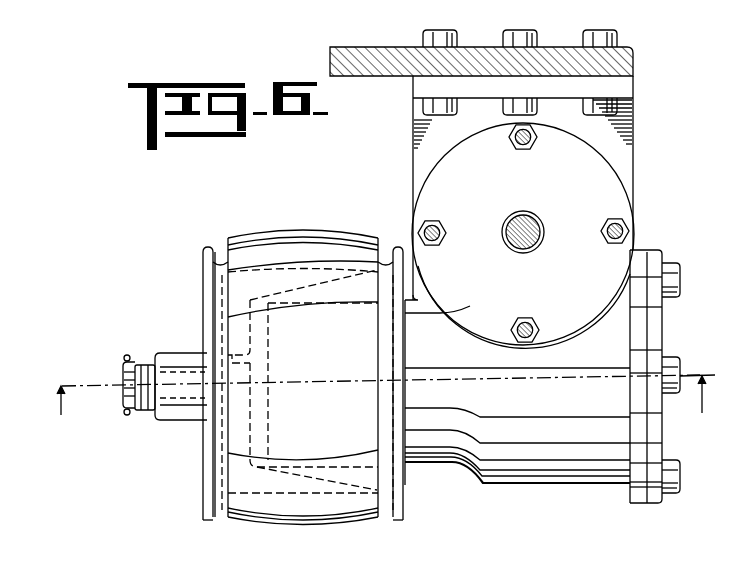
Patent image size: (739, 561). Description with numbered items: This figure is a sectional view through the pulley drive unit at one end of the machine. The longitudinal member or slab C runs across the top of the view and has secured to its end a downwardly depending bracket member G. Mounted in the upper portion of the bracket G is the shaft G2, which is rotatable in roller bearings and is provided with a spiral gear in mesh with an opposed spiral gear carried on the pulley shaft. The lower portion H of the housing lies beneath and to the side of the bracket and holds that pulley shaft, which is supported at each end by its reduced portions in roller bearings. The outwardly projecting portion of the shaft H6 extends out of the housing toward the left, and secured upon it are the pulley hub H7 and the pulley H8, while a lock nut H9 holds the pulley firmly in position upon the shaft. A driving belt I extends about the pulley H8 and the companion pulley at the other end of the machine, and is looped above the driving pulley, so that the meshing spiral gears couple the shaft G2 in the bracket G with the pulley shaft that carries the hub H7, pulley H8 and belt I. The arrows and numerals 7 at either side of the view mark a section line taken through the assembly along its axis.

The longitudinal member or slab C is at (634, 55).
The bracket member G is at (623, 142).
The shaft G2 is at (545, 222).
The driving belt I is at (288, 228).
The lower portion of the housing H is at (577, 453).
The outwardly projecting portion of the shaft H6 is at (122, 380).
The pulley hub H7 is at (185, 353).
The pulley H8 is at (217, 448).
The lock nut H9 is at (142, 365).
The section line 7- 7 is at (386, 392).